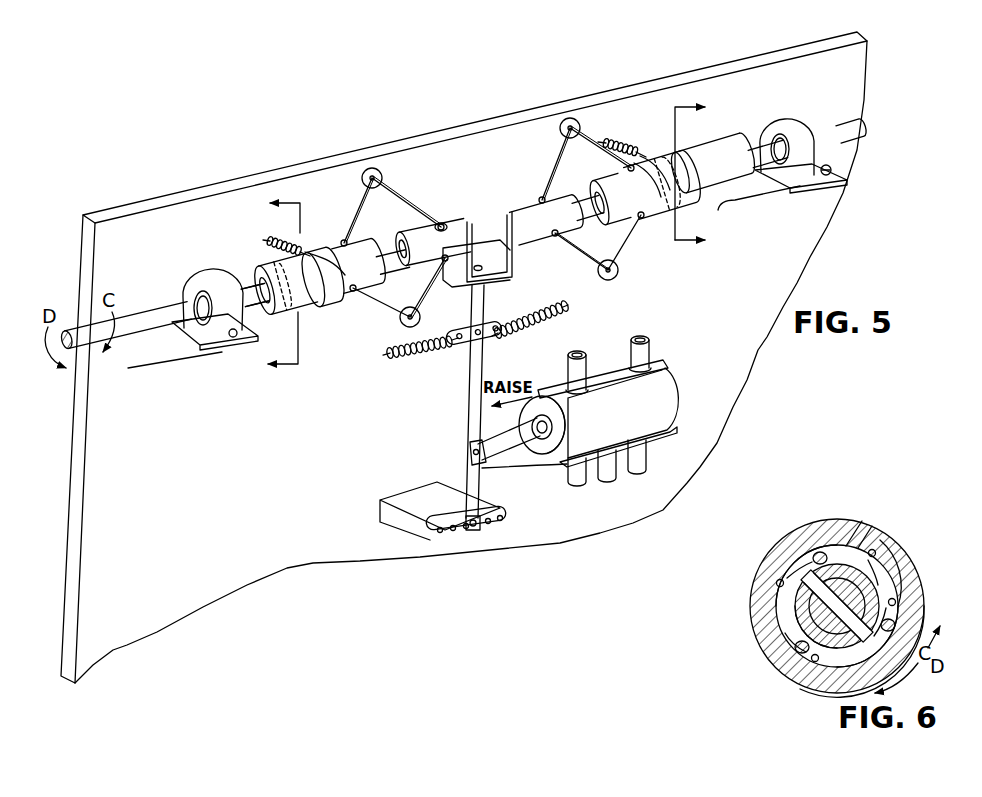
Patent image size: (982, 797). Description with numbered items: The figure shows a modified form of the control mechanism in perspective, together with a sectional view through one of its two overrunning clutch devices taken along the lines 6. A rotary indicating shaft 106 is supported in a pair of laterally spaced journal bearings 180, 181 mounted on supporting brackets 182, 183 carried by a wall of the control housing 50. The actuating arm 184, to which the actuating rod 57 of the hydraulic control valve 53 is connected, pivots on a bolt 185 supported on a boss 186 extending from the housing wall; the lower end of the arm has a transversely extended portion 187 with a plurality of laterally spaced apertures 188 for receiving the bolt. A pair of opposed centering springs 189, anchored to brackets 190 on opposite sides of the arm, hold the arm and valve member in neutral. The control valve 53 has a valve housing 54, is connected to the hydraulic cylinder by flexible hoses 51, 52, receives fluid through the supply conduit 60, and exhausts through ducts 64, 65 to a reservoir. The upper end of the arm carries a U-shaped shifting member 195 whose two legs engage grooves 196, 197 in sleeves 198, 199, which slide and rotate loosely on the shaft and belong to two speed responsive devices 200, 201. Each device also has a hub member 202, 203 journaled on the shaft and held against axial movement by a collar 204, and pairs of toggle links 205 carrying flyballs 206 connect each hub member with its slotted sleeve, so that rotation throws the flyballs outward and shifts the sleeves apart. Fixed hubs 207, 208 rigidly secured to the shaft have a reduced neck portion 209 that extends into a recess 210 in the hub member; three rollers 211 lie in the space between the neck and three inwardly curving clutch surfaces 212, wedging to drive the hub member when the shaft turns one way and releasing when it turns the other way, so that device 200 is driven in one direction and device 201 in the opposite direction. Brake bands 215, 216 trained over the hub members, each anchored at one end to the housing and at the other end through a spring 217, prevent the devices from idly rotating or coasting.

In FIG. 5, the control housing 50 is at (152, 208).
In FIG. 5, the rotary indicating shaft 106 is at (128, 322).
In FIG. 6, the rotary indicating shaft 106 is at (822, 612).
In FIG. 5, the journal bearing 180 is at (215, 287).
In FIG. 5, the journal bearing 181 is at (808, 126).
In FIG. 5, the supporting bracket 182 is at (222, 352).
In FIG. 5, the supporting bracket 183 is at (796, 188).
In FIG. 5, the actuating arm 184 is at (470, 408).
In FIG. 5, the bolt 185 is at (472, 532).
In FIG. 5, the boss 186 is at (390, 525).
In FIG. 5, the transversely extended portion 187 is at (500, 512).
In FIG. 5, the apertures 188 is at (500, 520).
In FIG. 5, the centering springs 189 is at (470, 340).
In FIG. 5, the brackets 190 is at (383, 354).
In FIG. 5, the U-shaped shifting member 195 is at (512, 266).
In FIG. 5, the groove 196 is at (447, 223).
In FIG. 5, the groove 197 is at (503, 215).
In FIG. 5, the sleeve 198 is at (458, 252).
In FIG. 5, the sleeve 199 is at (548, 224).
In FIG. 5, the speed responsive device 200 is at (344, 240).
In FIG. 6, the speed responsive device 200 is at (828, 512).
In FIG. 5, the speed responsive device 201 is at (538, 170).
In FIG. 6, the speed responsive device 201 is at (862, 651).
In FIG. 5, the hub member 202 is at (368, 290).
In FIG. 6, the hub member 202 is at (905, 560).
In FIG. 5, the hub member 203 is at (614, 206).
In FIG. 6, the hub member 203 is at (867, 636).
In FIG. 5, the collar 204 is at (603, 192).
In FIG. 5, the toggle links 205 is at (365, 245).
In FIG. 5, the flyballs 206 is at (382, 176).
In FIG. 5, the fixed hub 207 is at (268, 272).
In FIG. 6, the fixed hub 207 is at (795, 603).
In FIG. 5, the fixed hub 208 is at (730, 148).
In FIG. 6, the fixed hub 208 is at (816, 627).
In FIG. 5, the neck portion 209 is at (283, 305).
In FIG. 6, the neck portion 209 is at (854, 546).
In FIG. 6, the recess 210 is at (876, 540).
In FIG. 6, the rollers 211 is at (817, 550).
In FIG. 6, the clutch surfaces 212 is at (777, 580).
In FIG. 5, the brake band 215 is at (343, 255).
In FIG. 5, the brake band 216 is at (652, 165).
In FIG. 5, the spring 217 is at (283, 240).
In FIG. 5, the flexible hose 51 is at (586, 332).
In FIG. 5, the flexible hose 52 is at (655, 322).
In FIG. 5, the hydraulic control valve 53 is at (604, 414).
In FIG. 5, the valve housing 54 is at (628, 430).
In FIG. 5, the actuating rod 57 is at (508, 442).
In FIG. 5, the supply conduit 60 is at (608, 482).
In FIG. 5, the exhaust duct 64 is at (640, 472).
In FIG. 5, the exhaust duct 65 is at (577, 486).
In FIG. 5, the section line 6 is at (480, 235).